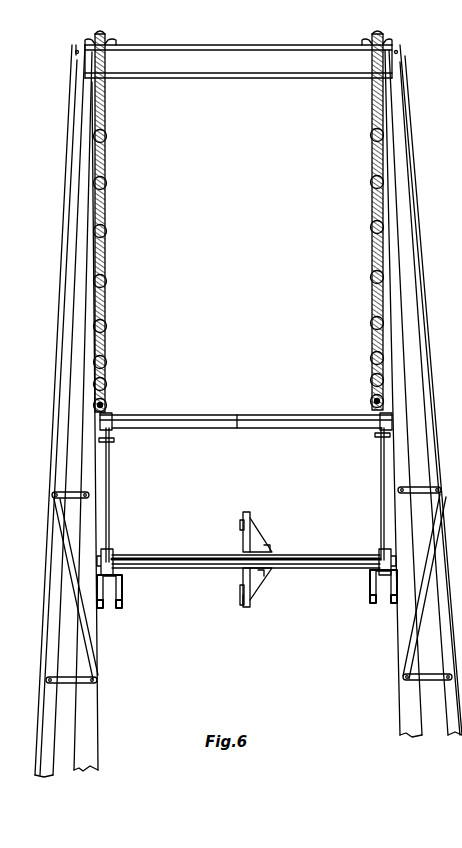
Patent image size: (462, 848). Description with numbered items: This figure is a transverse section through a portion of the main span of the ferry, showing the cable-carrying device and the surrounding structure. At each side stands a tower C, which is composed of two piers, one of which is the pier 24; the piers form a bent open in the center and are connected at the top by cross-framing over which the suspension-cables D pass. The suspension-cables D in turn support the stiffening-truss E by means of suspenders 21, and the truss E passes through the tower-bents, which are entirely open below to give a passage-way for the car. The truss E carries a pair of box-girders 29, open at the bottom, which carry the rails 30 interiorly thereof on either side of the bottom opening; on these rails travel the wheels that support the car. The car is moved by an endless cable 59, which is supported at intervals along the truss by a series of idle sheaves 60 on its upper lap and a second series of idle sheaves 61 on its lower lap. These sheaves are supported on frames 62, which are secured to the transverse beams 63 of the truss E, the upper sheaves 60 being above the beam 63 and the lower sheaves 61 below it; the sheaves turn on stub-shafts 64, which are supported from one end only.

The pier 24 is at (238, 58).
The suspenders 21 is at (105, 140).
The suspension-cables D is at (107, 243).
The stiffening-truss E is at (158, 423).
The tower C is at (430, 455).
The transverse beams 63 is at (168, 556).
The endless cable 59 is at (250, 515).
The idle sheaves 60 is at (240, 527).
The idle sheaves 61 is at (241, 606).
The frames 62 is at (261, 546).
The stub-shafts 64 is at (241, 597).
The box-girders 29 is at (123, 592).
The rails 30 is at (247, 589).